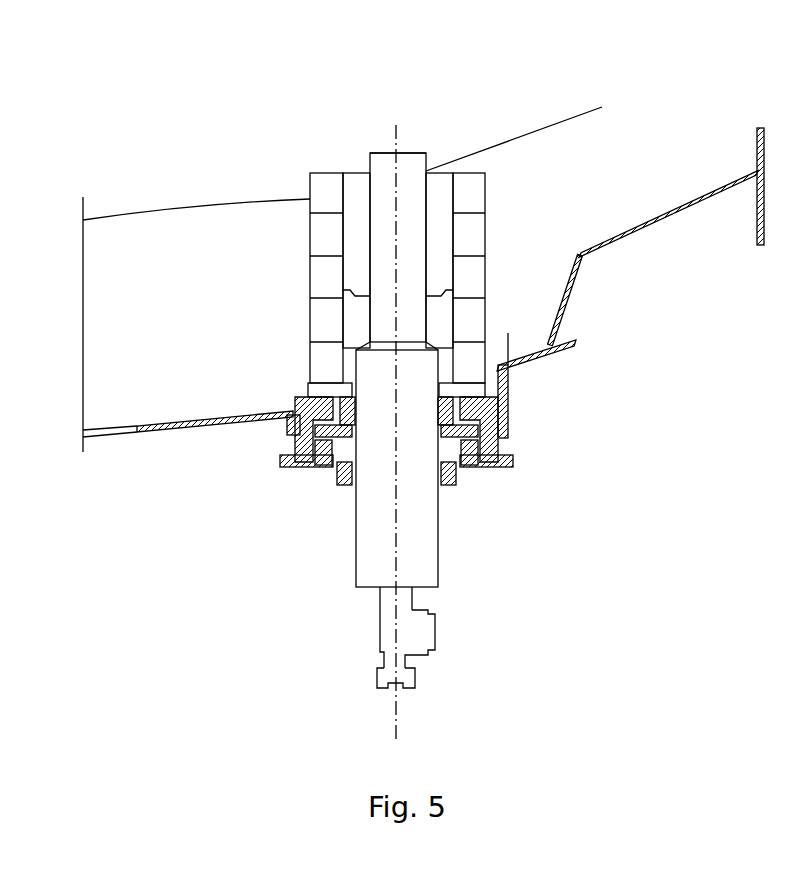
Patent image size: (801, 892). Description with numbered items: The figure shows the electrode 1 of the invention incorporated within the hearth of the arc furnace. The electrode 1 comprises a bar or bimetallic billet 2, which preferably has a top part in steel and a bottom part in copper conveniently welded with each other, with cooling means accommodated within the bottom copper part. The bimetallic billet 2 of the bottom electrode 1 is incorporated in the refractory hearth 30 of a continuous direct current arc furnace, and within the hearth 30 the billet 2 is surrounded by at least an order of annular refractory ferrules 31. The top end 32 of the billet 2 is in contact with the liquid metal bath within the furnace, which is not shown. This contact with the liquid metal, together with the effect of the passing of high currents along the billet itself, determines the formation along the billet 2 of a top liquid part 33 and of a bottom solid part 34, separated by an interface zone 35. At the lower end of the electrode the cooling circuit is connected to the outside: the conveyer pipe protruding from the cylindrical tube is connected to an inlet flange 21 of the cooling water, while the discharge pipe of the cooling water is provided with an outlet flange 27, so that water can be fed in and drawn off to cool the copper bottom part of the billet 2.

The electrode 1 is at (330, 551).
The bimetallic billet 2 is at (388, 238).
The inlet flange 21 is at (387, 670).
The outlet flange 27 is at (430, 633).
The refractory hearth 30 is at (205, 400).
The annular refractory ferrules 31 is at (354, 192).
The top end 32 is at (420, 152).
The top liquid part 33 is at (384, 190).
The bottom solid part 34 is at (413, 327).
The interface zone 35 is at (425, 300).